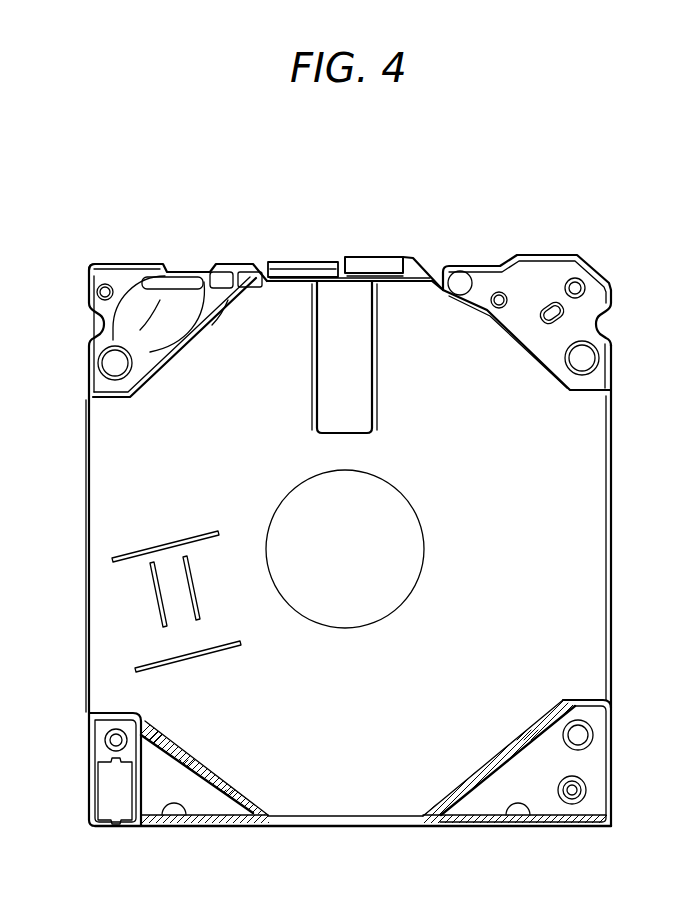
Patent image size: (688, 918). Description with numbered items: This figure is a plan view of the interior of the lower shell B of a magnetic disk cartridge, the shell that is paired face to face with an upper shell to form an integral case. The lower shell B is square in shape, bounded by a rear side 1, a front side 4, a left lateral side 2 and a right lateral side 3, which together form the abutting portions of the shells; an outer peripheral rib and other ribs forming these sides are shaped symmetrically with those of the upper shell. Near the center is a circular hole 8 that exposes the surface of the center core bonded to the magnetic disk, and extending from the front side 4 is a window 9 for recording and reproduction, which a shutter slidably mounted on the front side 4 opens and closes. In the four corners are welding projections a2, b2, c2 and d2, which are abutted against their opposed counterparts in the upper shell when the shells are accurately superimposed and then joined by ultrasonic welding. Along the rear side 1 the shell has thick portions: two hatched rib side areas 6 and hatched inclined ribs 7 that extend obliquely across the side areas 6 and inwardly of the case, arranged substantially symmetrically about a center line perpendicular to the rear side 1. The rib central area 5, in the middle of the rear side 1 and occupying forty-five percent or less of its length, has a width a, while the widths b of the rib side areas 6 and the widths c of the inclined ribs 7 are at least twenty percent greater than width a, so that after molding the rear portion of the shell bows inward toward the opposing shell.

The rear side 1 is at (300, 828).
The left lateral side 2 is at (86, 530).
The right lateral side 3 is at (614, 551).
The front side 4 is at (369, 257).
The rib central area 5 is at (338, 828).
The rib side areas 6 is at (158, 830).
The inclined ribs 7 is at (223, 790).
The circular hole 8 is at (404, 540).
The window 9 is at (358, 390).
The lower shell B is at (547, 286).
The width of the rib central area a is at (375, 797).
The width of the rib side areas b is at (212, 800).
The width of the inclined ribs c is at (182, 790).
The welding projection a2 is at (581, 790).
The welding projection b2 is at (578, 286).
The welding projection c2 is at (91, 270).
The welding projection d2 is at (108, 742).